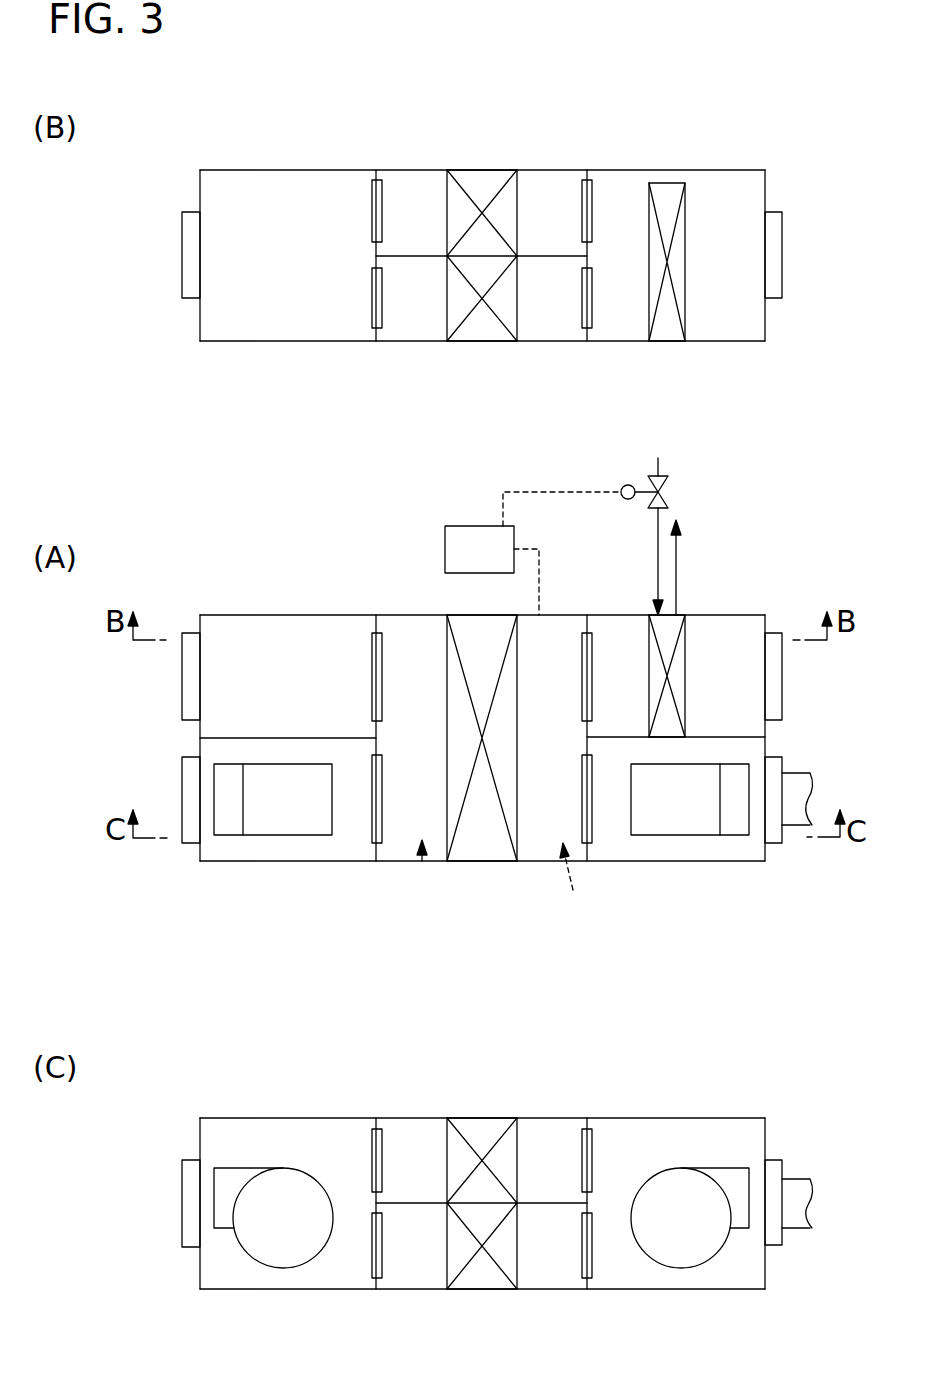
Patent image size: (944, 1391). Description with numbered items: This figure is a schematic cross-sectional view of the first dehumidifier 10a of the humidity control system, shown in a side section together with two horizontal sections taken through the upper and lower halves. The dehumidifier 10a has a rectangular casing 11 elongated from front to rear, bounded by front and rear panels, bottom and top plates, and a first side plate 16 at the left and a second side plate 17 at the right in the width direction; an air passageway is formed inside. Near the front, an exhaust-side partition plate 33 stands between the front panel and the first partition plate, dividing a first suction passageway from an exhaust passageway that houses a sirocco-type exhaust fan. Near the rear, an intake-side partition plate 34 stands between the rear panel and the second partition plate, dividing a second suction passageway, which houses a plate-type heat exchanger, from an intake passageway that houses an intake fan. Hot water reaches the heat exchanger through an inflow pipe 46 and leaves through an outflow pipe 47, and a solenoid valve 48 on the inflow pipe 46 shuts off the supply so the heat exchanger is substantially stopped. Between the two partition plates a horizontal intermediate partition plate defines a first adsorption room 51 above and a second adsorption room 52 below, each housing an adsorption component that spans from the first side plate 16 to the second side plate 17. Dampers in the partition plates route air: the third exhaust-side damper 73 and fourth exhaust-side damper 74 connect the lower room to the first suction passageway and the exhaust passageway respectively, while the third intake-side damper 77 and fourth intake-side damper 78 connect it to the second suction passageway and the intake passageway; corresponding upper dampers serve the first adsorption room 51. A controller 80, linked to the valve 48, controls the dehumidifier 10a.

The first dehumidifier 10a is at (755, 603).
The casing 11 is at (231, 610).
The first side plate 16 is at (268, 614).
The second side plate 17 is at (639, 863).
The exhaust-side partition plate 33 is at (220, 738).
The intake-side partition plate 34 is at (700, 737).
The inflow pipe 46 is at (657, 545).
The outflow pipe 47 is at (677, 547).
The solenoid valve 48 is at (621, 487).
The first adsorption room 51 is at (422, 862).
The second adsorption room 52 is at (575, 886).
The third exhaust-side damper 73 is at (383, 318).
The fourth exhaust-side damper 74 is at (383, 1268).
The third intake-side damper 77 is at (593, 318).
The fourth intake-side damper 78 is at (593, 1268).
The controller 80 is at (445, 540).